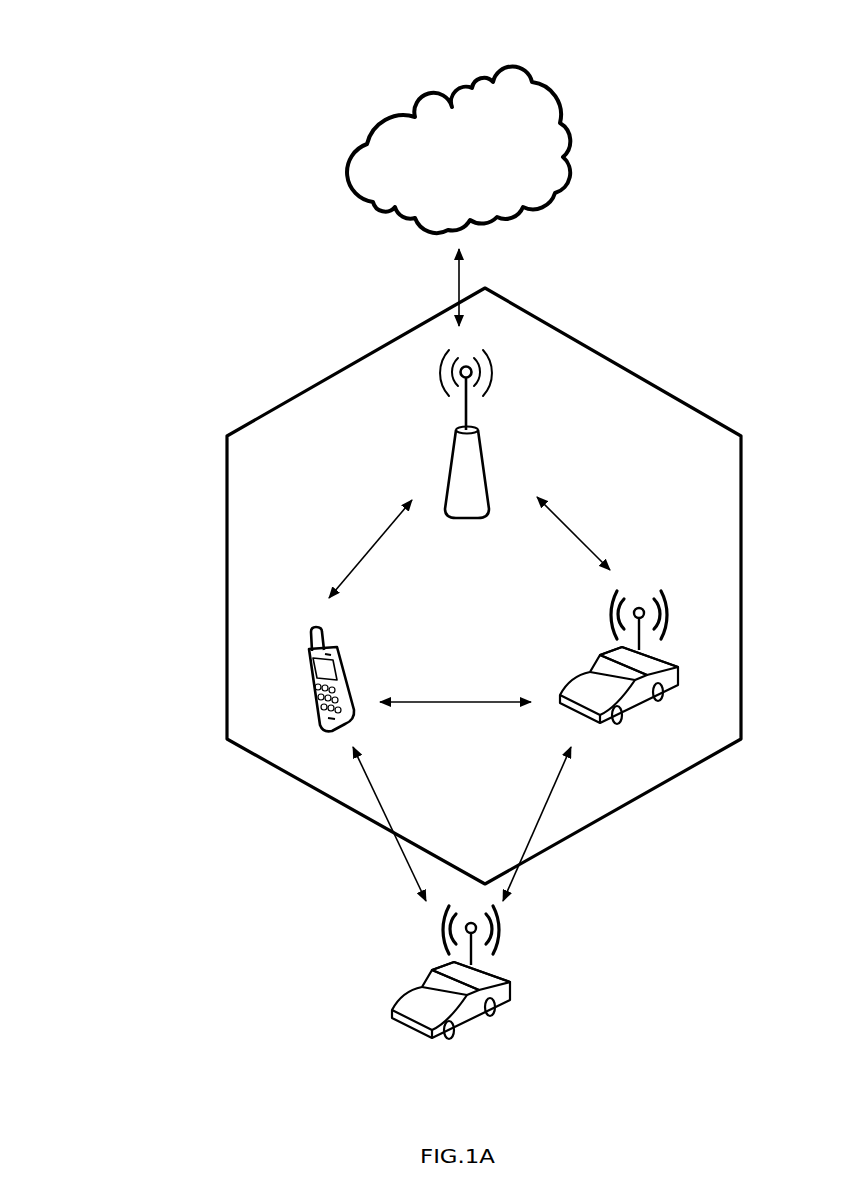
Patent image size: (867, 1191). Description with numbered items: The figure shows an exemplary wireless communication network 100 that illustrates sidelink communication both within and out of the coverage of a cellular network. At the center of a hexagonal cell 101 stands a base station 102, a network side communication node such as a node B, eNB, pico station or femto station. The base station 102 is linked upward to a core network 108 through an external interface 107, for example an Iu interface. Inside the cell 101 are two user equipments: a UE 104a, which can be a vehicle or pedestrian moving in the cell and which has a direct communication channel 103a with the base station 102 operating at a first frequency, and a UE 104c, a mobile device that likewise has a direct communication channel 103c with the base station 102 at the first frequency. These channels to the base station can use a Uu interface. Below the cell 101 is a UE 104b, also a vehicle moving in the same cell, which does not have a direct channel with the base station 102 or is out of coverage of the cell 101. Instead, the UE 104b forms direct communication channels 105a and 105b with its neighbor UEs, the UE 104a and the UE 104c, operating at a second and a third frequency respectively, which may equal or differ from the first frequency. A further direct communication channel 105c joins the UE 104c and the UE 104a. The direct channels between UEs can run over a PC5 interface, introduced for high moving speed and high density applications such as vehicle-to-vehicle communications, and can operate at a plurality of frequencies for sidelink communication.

The wireless communication network 100 is at (128, 113).
The cell 101 is at (672, 752).
The base station 102 is at (490, 463).
The direct communication channel 103a is at (577, 530).
The direct communication channel 103c is at (355, 562).
The UE 104a is at (668, 645).
The UE 104b is at (535, 990).
The UE 104c is at (295, 660).
The direct communication channel 105a is at (535, 833).
The direct communication channel 105b is at (390, 825).
The direct communication channel 105c is at (437, 697).
The external interface 107 is at (462, 273).
The core network 108 is at (385, 138).